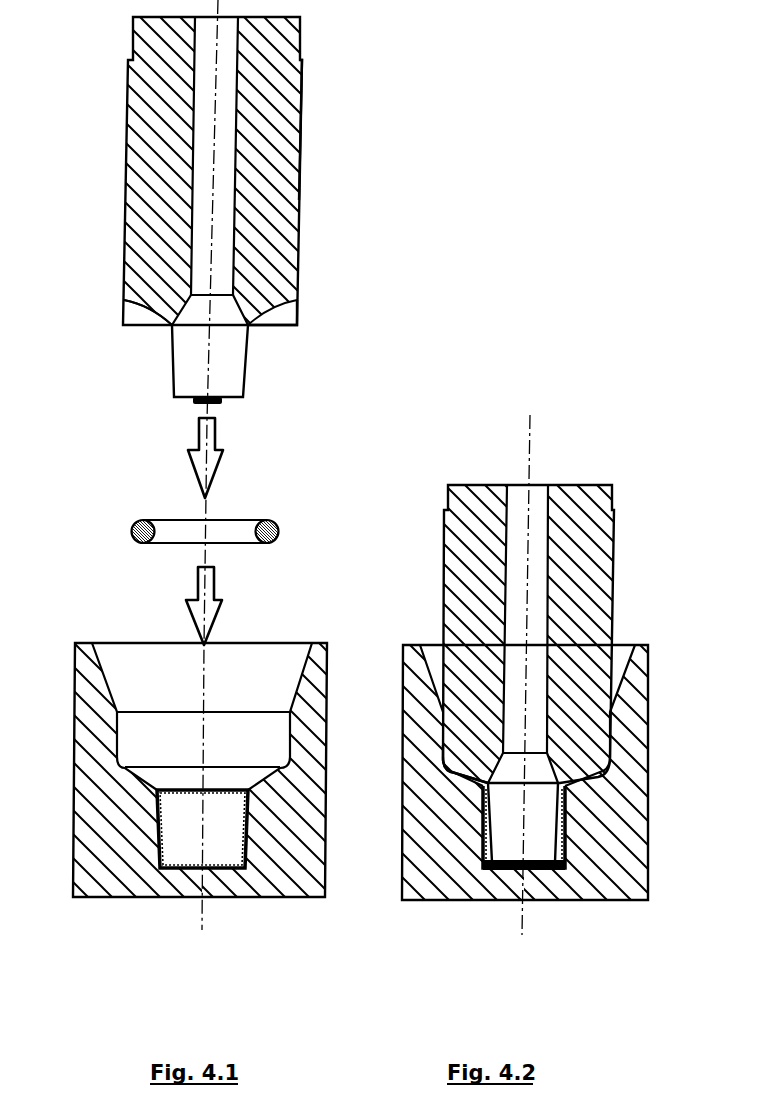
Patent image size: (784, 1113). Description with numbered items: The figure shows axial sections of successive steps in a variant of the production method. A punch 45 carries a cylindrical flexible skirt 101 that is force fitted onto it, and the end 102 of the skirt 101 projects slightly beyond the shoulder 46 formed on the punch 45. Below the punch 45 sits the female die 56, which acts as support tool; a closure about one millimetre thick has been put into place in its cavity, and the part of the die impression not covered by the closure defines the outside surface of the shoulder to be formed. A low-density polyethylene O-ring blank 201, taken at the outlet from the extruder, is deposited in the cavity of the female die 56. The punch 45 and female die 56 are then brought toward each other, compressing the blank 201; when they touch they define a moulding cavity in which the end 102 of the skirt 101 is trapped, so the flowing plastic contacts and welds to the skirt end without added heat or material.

The punch 45 is at (168, 62).
The cylindrical flexible skirt 101 is at (300, 110).
The shoulder 46 is at (150, 306).
The end of the skirt 102 is at (297, 318).
The O-ring blank 201 is at (132, 525).
The female die 56 is at (282, 870).